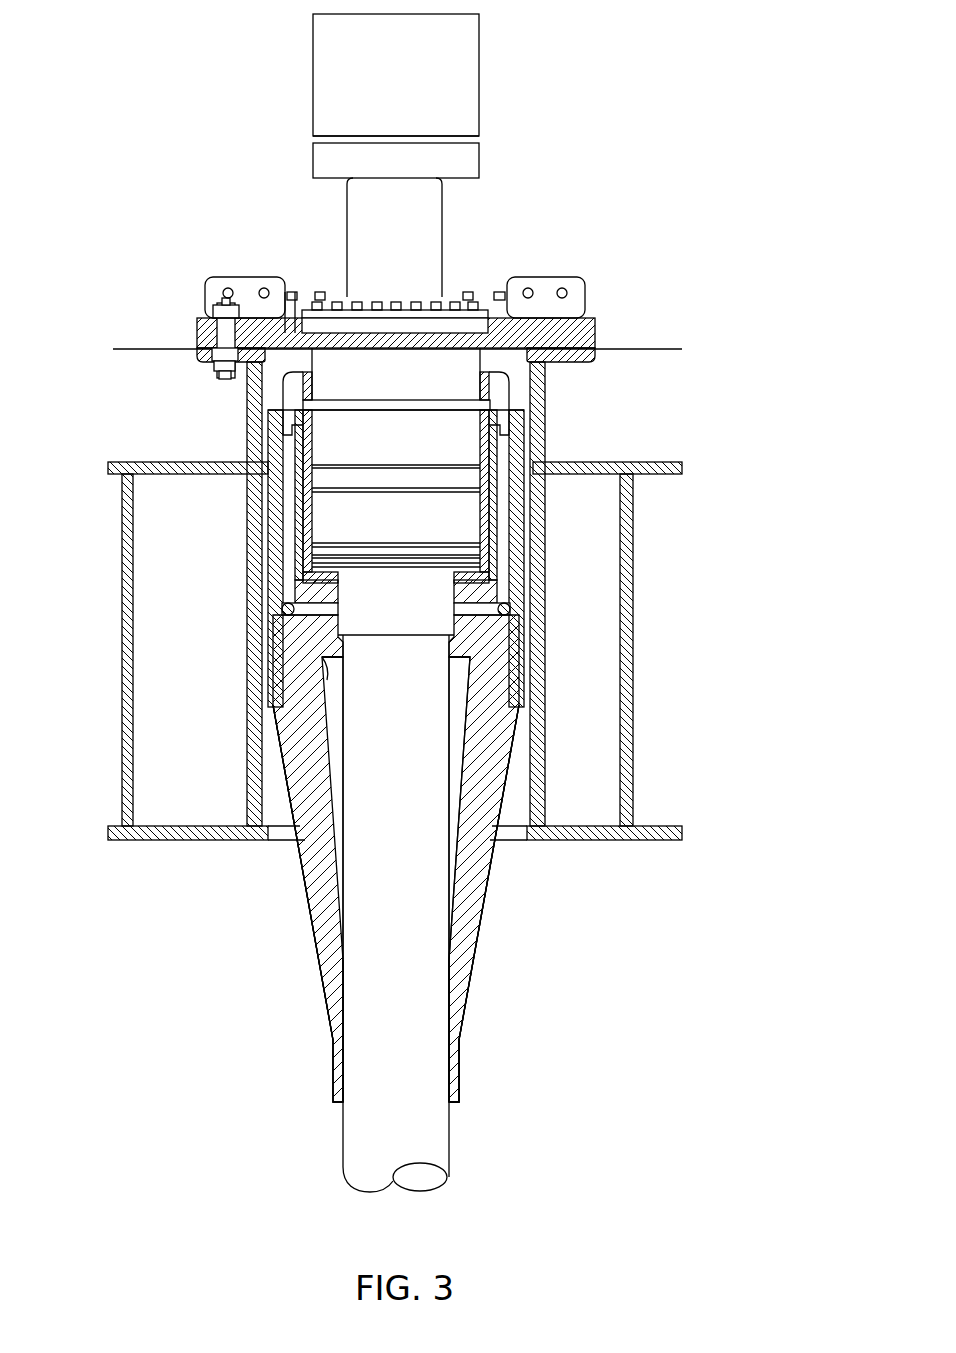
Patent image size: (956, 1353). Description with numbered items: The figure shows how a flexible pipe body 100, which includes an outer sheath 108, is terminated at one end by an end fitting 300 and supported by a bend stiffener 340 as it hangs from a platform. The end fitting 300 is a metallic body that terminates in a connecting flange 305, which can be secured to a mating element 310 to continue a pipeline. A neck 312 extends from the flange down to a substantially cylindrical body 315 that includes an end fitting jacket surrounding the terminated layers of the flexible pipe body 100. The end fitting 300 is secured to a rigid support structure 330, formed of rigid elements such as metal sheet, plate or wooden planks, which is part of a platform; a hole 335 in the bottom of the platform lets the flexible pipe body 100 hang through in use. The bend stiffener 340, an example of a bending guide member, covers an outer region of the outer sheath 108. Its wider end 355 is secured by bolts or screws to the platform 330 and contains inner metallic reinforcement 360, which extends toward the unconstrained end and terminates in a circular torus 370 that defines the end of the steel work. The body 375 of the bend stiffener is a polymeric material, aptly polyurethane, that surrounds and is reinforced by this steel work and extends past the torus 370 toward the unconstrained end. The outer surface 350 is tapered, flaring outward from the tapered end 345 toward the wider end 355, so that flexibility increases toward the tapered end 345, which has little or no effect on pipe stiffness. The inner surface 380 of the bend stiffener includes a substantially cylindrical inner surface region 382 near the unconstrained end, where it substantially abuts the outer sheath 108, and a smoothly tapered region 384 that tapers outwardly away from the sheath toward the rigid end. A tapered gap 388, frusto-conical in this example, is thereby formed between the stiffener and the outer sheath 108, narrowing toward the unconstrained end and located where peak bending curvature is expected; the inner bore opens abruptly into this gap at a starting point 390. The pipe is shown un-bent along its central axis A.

The end fitting 300 is at (596, 86).
The mating element 310 is at (325, 62).
The connecting flange 305 is at (325, 162).
The neck 312 is at (432, 238).
The substantially cylindrical body 315 is at (470, 432).
The wider end 355 is at (265, 485).
The rigid support structure 330 is at (160, 770).
The inner metallic reinforcement 360 is at (503, 578).
The circular torus 370 is at (509, 613).
The starting point 390 is at (322, 662).
The tapered gap 388 is at (455, 740).
The body 375 is at (472, 872).
The smoothly tapered region 384 is at (343, 812).
The outer surface 350 is at (320, 985).
The hole 335 is at (267, 915).
The bend stiffener 340 is at (510, 935).
The tapered end 345 is at (478, 1079).
The flexible pipe body 100 is at (280, 1158).
The outer sheath 108 is at (440, 1143).
The inner surface 380 is at (354, 1008).
The substantially cylindrical inner surface region 382 is at (438, 1005).
The central axis A is at (370, 1148).